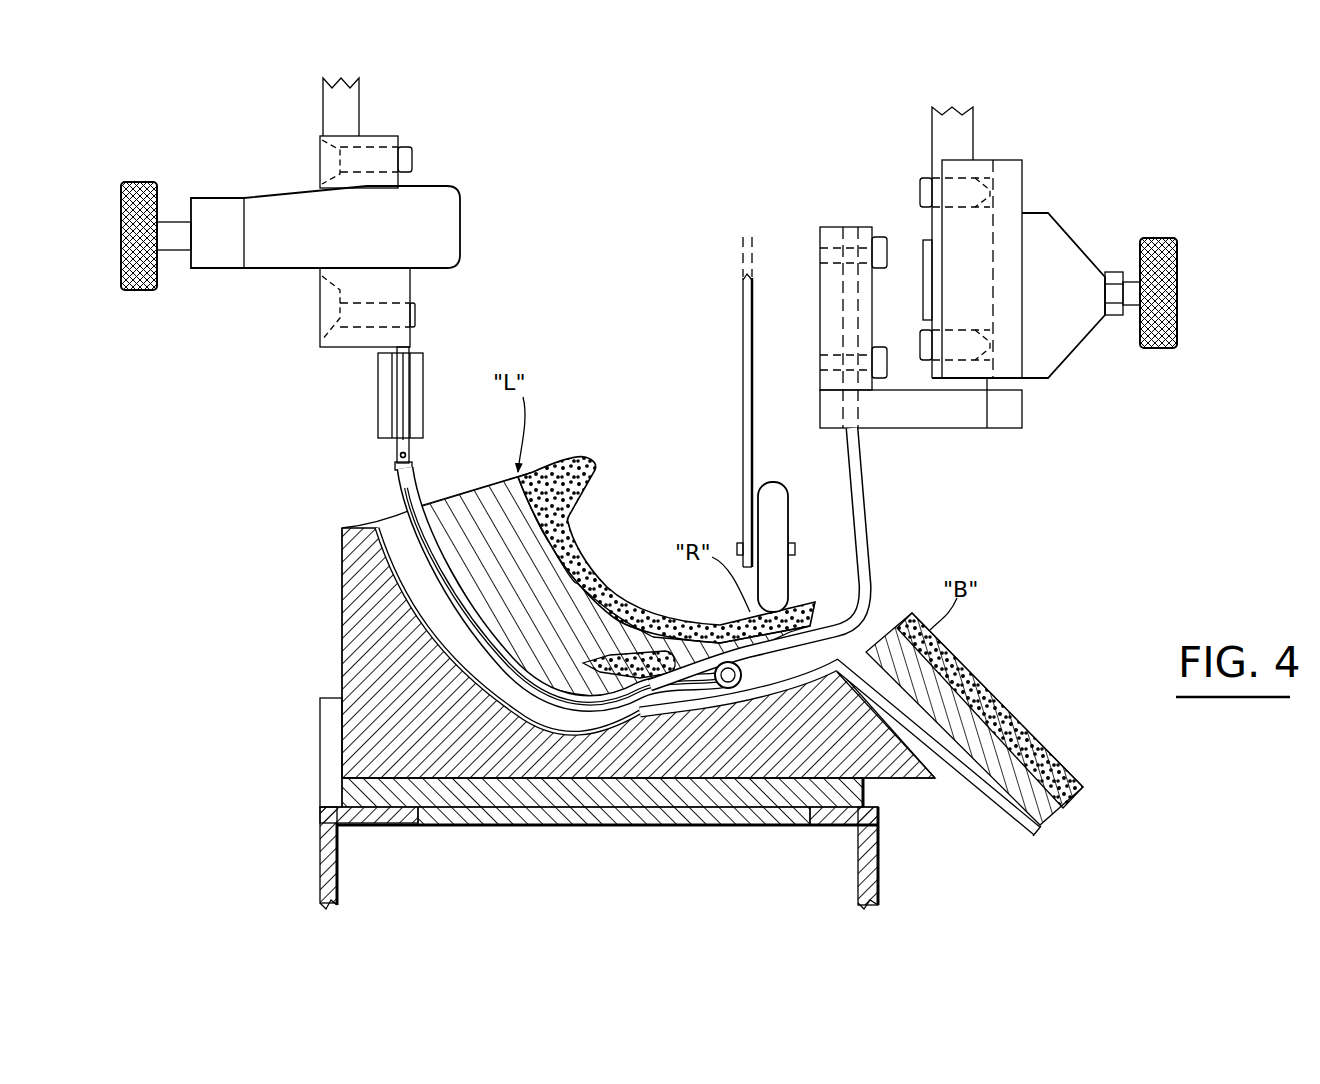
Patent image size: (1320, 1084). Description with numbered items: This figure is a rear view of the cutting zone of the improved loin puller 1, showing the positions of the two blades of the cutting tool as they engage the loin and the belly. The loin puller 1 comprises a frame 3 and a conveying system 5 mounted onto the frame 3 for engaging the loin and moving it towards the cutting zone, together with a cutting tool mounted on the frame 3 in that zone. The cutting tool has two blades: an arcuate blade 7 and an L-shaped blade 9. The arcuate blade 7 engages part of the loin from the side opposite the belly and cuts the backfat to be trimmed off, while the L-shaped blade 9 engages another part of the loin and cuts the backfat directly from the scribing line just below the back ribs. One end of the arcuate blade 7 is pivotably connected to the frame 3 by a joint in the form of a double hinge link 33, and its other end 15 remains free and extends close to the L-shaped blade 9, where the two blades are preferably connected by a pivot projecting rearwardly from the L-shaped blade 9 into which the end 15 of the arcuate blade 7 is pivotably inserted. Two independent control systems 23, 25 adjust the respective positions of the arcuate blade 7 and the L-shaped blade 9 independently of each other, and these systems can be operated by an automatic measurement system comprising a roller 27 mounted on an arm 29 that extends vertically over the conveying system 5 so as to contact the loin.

The loin puller 1 is at (253, 435).
The frame 3 is at (320, 866).
The conveying system 5 is at (342, 630).
The arcuate blade 7 is at (420, 492).
The L-shaped blade 9 is at (875, 510).
The free end of the arcuate blade 15 is at (722, 661).
The adjusting system for the arcuate blade 23 is at (412, 287).
The adjusting system for the L-shaped blade 25 is at (852, 227).
The roller 27 is at (789, 496).
The arm 29 is at (743, 342).
The double hinge link 33 is at (392, 472).